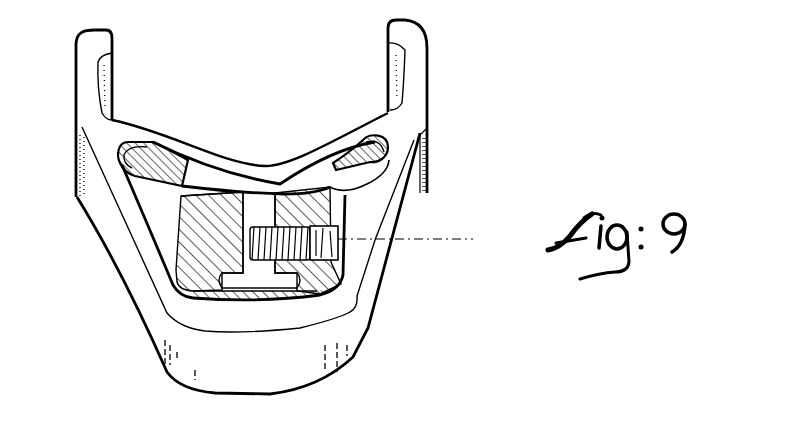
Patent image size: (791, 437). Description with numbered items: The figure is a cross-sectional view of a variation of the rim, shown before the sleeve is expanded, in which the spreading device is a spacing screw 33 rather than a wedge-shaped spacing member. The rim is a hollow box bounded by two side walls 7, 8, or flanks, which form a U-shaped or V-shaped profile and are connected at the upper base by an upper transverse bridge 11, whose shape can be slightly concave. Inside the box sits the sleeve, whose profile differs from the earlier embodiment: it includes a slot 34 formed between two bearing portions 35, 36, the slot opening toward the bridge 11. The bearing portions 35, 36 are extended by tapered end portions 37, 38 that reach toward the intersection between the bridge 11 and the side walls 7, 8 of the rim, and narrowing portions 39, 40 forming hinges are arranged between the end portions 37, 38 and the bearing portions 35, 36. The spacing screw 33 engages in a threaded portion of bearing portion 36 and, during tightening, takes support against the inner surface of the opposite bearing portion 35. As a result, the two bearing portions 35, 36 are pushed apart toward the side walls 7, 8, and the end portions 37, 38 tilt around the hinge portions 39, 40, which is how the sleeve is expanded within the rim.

The side wall 7 is at (138, 283).
The side wall 8 is at (378, 263).
The upper transverse bridge 11 is at (302, 163).
The spacing screw 33 is at (357, 309).
The slot 34 is at (258, 207).
The bearing portion 35 is at (192, 227).
The bearing portion 36 is at (310, 216).
The tapered end portion 37 is at (138, 148).
The tapered end portion 38 is at (364, 138).
The narrowing portion 39 is at (181, 195).
The narrowing portion 40 is at (381, 190).